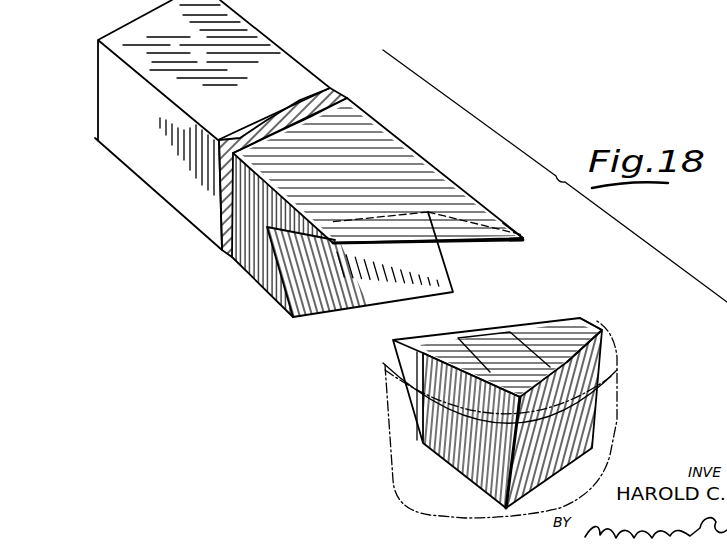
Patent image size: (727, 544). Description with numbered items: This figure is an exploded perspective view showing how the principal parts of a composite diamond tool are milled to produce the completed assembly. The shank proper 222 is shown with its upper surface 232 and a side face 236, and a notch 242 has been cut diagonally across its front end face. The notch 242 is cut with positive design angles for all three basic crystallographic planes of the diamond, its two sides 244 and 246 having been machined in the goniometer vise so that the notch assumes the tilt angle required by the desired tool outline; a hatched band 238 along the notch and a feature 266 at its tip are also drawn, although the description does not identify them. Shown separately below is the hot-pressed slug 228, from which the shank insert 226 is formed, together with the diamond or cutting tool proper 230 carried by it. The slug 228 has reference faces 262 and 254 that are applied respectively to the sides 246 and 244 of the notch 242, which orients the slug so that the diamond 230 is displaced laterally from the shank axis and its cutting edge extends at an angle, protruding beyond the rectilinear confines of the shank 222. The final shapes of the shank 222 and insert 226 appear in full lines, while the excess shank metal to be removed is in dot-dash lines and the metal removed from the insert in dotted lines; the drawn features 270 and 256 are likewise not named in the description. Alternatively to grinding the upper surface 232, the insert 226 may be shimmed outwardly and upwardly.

The shank proper 222 is at (201, 57).
The upper surface of the shank 232 is at (206, 125).
The side surface of block 236 is at (120, 143).
The bonding layer 238 is at (336, 99).
The notch 242 is at (400, 207).
The side of the notch 244 is at (310, 238).
The tip of wedge 266 is at (519, 241).
The side of the notch 246 is at (355, 300).
The hot-pressed slug 228 is at (618, 435).
The shank insert 226 is at (500, 393).
The reference face 262 is at (392, 371).
The rake face 270 is at (530, 378).
The diamond or cutting tool proper 230 is at (514, 370).
The reference face 254 is at (572, 332).
The rim 256 is at (604, 377).